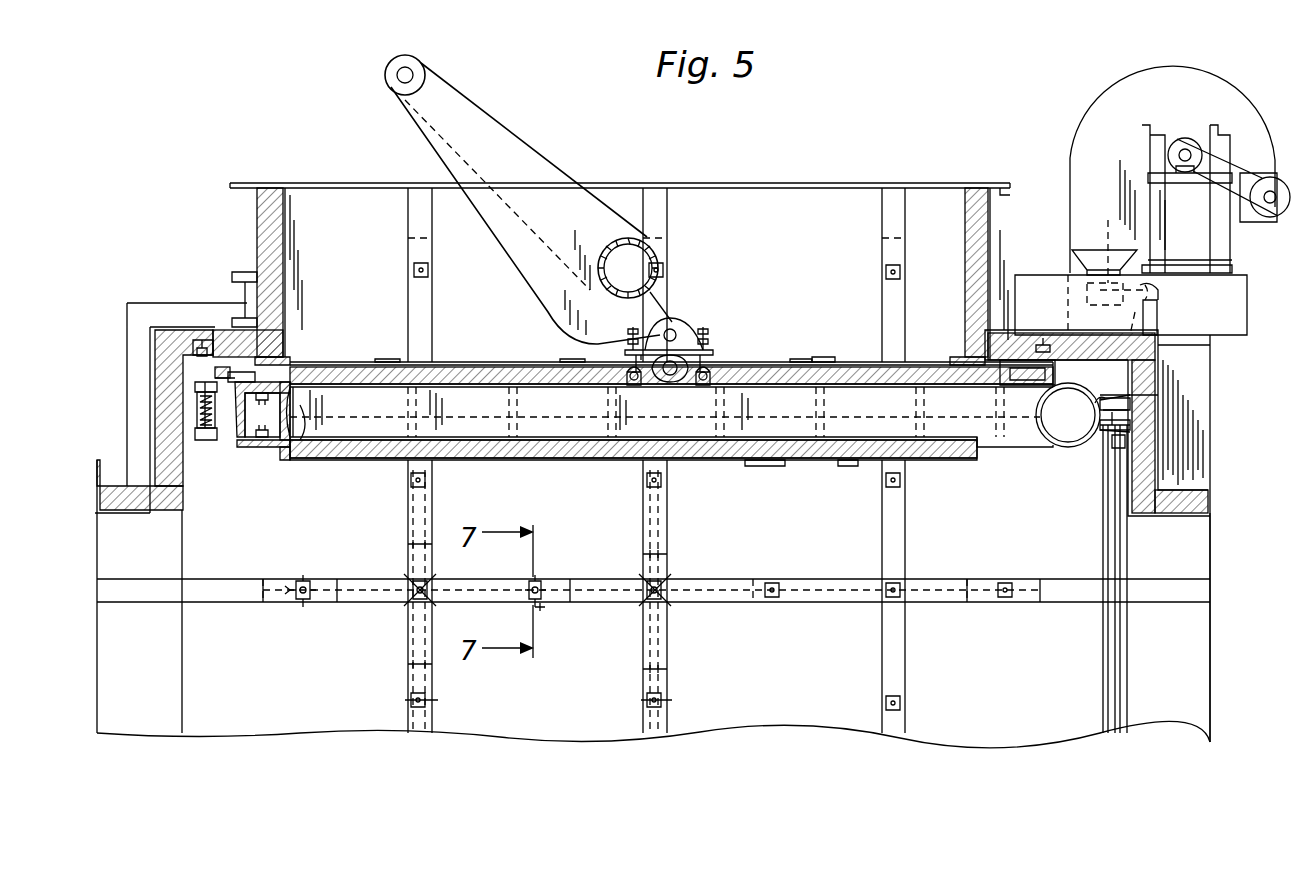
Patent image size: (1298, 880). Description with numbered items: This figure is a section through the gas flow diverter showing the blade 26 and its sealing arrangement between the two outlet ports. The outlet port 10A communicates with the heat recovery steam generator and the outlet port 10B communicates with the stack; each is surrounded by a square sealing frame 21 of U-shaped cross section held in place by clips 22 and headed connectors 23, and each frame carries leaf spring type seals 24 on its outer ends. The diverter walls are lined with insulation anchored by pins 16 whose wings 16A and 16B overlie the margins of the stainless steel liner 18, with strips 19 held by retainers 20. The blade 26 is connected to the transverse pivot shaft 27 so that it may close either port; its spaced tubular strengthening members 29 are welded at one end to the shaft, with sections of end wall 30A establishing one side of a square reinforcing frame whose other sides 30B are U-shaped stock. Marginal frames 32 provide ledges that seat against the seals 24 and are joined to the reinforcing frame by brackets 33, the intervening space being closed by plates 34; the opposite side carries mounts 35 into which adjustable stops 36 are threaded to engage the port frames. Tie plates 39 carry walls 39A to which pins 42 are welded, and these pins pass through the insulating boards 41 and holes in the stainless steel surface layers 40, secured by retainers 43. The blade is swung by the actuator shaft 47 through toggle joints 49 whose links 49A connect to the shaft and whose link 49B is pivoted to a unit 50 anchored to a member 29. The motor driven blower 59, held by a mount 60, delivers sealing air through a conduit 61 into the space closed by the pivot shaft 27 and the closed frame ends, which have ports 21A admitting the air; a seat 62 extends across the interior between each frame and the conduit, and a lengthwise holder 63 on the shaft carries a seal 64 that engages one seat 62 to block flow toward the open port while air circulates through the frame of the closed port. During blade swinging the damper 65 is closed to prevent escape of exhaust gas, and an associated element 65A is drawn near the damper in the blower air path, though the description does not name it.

The diverter outlet port 10A is at (1195, 646).
The diverter outlet port 10B is at (834, 182).
The pins 16 is at (528, 580).
The wings 16A is at (308, 603).
The wings 16B is at (405, 600).
The stainless steel liner 18 is at (777, 677).
The strips 19 is at (275, 603).
The retainers 20 is at (545, 597).
The sealing frame 21 is at (180, 354).
The ports 21A is at (1152, 380).
The clips 22 is at (197, 340).
The headed connectors 23 is at (201, 340).
The leaf spring type seals 24 is at (1000, 360).
The blade 26 is at (372, 463).
The pivot shaft 27 is at (1140, 398).
The tubular strengthening members 29 is at (495, 428).
The end wall 30A is at (1013, 455).
The reinforcing frame sides 30B is at (290, 440).
The marginal frames 32 is at (291, 357).
The brackets 33 is at (293, 384).
The plates 34 is at (240, 415).
The mounts 35 is at (197, 410).
The adjustable stops 36 is at (199, 385).
The tie plates 39 is at (845, 462).
The walls 39A is at (778, 462).
The surface layers 40 is at (851, 362).
The insulating boards 41 is at (755, 362).
The pins 42 is at (830, 361).
The retainers 43 is at (815, 361).
The shaft 47 is at (657, 264).
The toggle joints 49 is at (528, 199).
The links 49A is at (552, 173).
The toggle joint link 49B is at (500, 250).
The unit 50 is at (690, 323).
The motor driven blower 59 is at (1084, 102).
The mount 60 is at (1055, 274).
The conduit 61 is at (1160, 348).
The seat 62 is at (1160, 365).
The holder 63 is at (1093, 410).
The seal 64 is at (1130, 410).
The damper 65 is at (1108, 240).
The feed valve 65A is at (1158, 318).